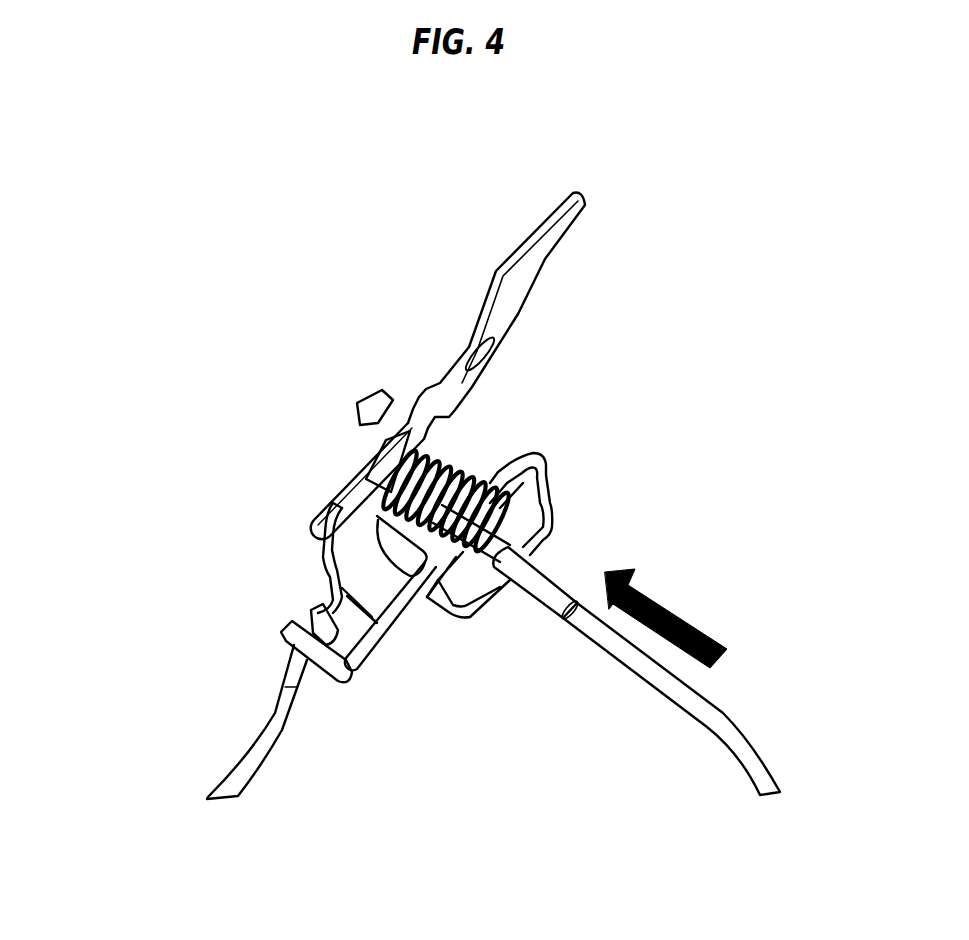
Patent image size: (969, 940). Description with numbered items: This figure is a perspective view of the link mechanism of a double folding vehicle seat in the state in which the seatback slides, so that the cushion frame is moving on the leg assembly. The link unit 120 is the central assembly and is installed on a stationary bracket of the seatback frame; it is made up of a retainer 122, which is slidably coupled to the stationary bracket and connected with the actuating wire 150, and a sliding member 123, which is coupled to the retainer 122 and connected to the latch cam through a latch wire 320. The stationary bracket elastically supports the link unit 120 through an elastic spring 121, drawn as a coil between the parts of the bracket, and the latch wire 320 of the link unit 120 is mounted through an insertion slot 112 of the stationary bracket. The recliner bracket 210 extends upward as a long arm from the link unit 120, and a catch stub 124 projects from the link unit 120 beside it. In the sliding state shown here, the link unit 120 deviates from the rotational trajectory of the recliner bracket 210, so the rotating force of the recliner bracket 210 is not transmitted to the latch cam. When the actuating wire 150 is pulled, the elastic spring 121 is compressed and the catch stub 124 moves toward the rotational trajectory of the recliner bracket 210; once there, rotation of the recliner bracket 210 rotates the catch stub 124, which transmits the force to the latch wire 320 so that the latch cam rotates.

The recliner bracket 210 is at (493, 285).
The catch stub 124 is at (370, 400).
The sliding member 123 is at (360, 447).
The link unit 120 is at (357, 510).
The retainer 122 is at (363, 492).
The elastic spring 121 is at (547, 465).
The insertion slot 112 is at (288, 627).
The actuating wire 150 is at (735, 735).
The latch wire 320 is at (255, 755).